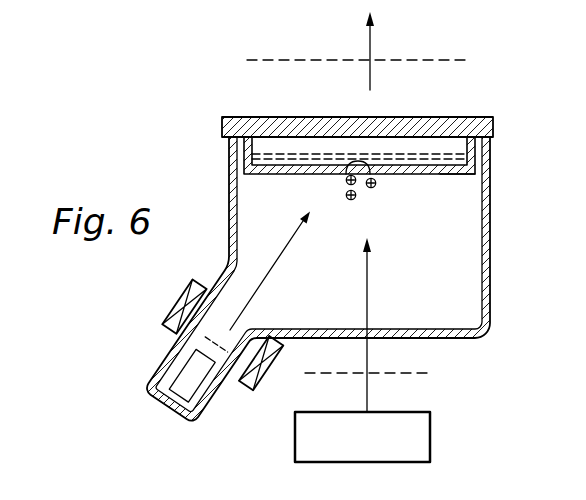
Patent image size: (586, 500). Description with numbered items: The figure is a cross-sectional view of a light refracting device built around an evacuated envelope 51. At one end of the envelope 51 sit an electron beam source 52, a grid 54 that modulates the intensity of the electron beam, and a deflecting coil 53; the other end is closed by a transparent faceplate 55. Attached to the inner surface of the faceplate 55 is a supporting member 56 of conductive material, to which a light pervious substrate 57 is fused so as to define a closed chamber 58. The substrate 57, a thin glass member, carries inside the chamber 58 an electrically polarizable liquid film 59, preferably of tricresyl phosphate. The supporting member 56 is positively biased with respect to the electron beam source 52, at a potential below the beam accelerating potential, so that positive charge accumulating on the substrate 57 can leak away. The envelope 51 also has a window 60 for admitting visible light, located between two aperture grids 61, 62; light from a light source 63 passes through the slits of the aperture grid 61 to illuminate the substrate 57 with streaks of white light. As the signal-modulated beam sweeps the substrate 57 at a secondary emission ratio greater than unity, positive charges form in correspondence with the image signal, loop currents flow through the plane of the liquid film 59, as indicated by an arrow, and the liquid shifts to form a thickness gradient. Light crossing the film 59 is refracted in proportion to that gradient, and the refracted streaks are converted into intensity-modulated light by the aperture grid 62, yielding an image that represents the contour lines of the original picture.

The evacuated envelope 51 is at (486, 310).
The electron beam source 52 is at (165, 405).
The deflecting coil 53 is at (163, 328).
The grid 54 is at (226, 353).
The transparent faceplate 55 is at (470, 118).
The supporting member 56 is at (476, 148).
The light pervious substrate 57 is at (457, 176).
The closed chamber 58 is at (265, 148).
The electrically polarizable liquid film 59 is at (343, 153).
The window 60 is at (405, 328).
The aperture grid 61 is at (432, 374).
The aperture grid 62 is at (470, 60).
The light source 63 is at (430, 447).